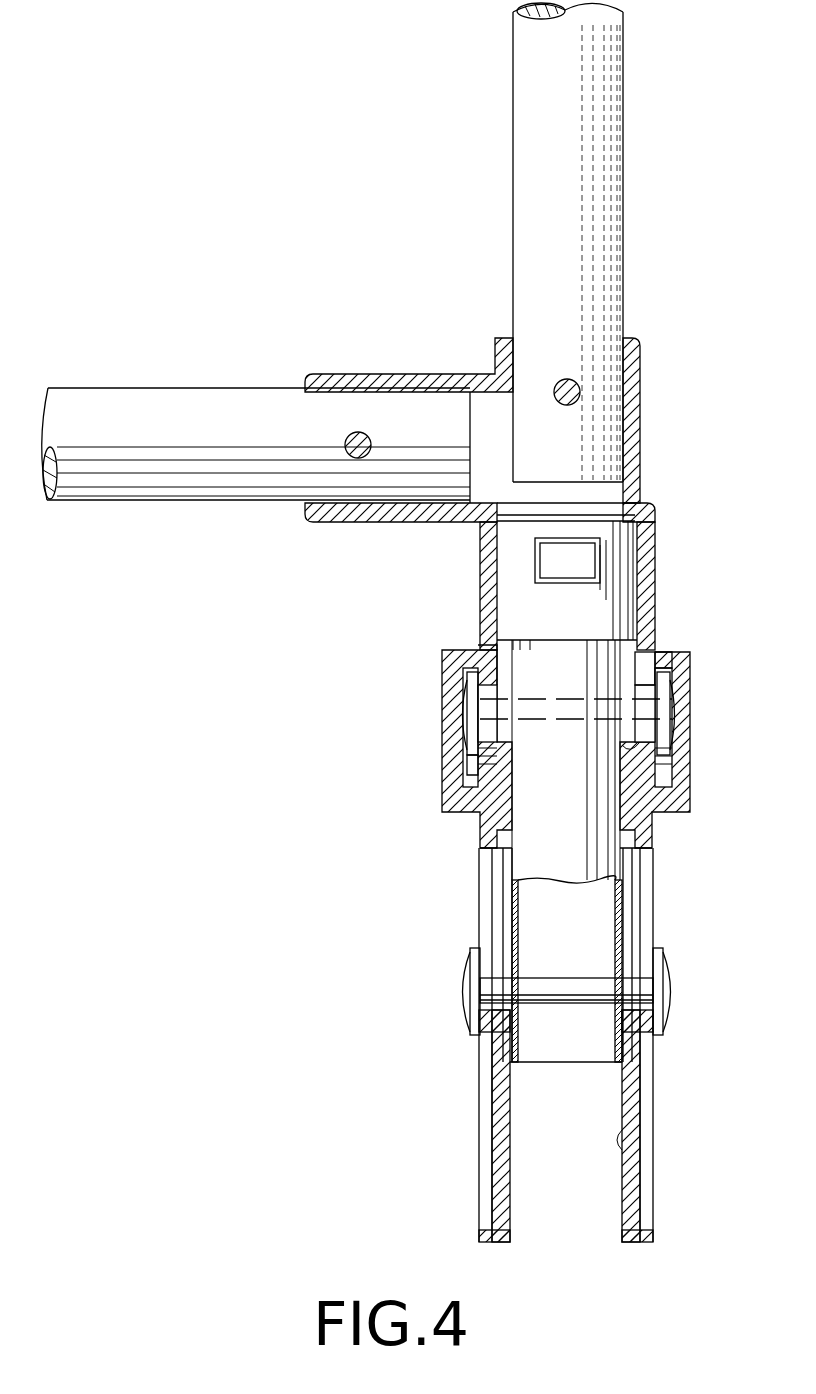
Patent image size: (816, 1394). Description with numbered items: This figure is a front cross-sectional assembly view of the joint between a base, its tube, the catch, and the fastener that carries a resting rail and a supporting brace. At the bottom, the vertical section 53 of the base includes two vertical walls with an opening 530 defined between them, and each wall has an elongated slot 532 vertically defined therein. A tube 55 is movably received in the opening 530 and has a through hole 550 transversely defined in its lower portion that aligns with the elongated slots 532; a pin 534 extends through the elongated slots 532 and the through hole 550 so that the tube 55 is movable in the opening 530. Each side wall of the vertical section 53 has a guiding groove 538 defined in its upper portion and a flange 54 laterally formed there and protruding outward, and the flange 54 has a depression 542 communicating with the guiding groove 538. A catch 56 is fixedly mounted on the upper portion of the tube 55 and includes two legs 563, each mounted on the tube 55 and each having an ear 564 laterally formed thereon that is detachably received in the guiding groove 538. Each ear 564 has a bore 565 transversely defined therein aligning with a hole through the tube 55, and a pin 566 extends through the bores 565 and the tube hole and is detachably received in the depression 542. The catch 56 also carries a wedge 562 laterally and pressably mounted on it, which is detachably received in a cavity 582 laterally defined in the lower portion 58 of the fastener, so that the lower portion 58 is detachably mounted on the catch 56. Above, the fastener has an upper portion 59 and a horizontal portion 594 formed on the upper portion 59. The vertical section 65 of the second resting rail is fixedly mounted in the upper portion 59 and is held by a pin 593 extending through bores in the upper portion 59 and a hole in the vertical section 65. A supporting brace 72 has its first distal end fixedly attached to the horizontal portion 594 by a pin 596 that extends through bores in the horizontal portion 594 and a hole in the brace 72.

The vertical section 65 is at (612, 212).
The supporting brace 72 is at (155, 400).
The horizontal portion 594 is at (430, 378).
The pin 596 is at (348, 432).
The pin 593 is at (580, 390).
The upper portion 59 is at (632, 425).
The lower portion 58 is at (490, 600).
The catch 56 is at (632, 610).
The cavity 582 is at (634, 578).
The wedge 562 is at (548, 553).
The flange 54 is at (676, 762).
The depression 542 is at (665, 660).
The leg 563 is at (498, 660).
The guiding groove 538 is at (650, 682).
The ear 564 is at (485, 700).
The bore 565 is at (470, 735).
The pin 566 is at (640, 790).
The elongated slot 532 is at (640, 852).
The tube 55 is at (622, 920).
The pin 534 is at (530, 990).
The through hole 550 is at (640, 1000).
The vertical section 53 is at (648, 1085).
The opening 530 is at (635, 1140).